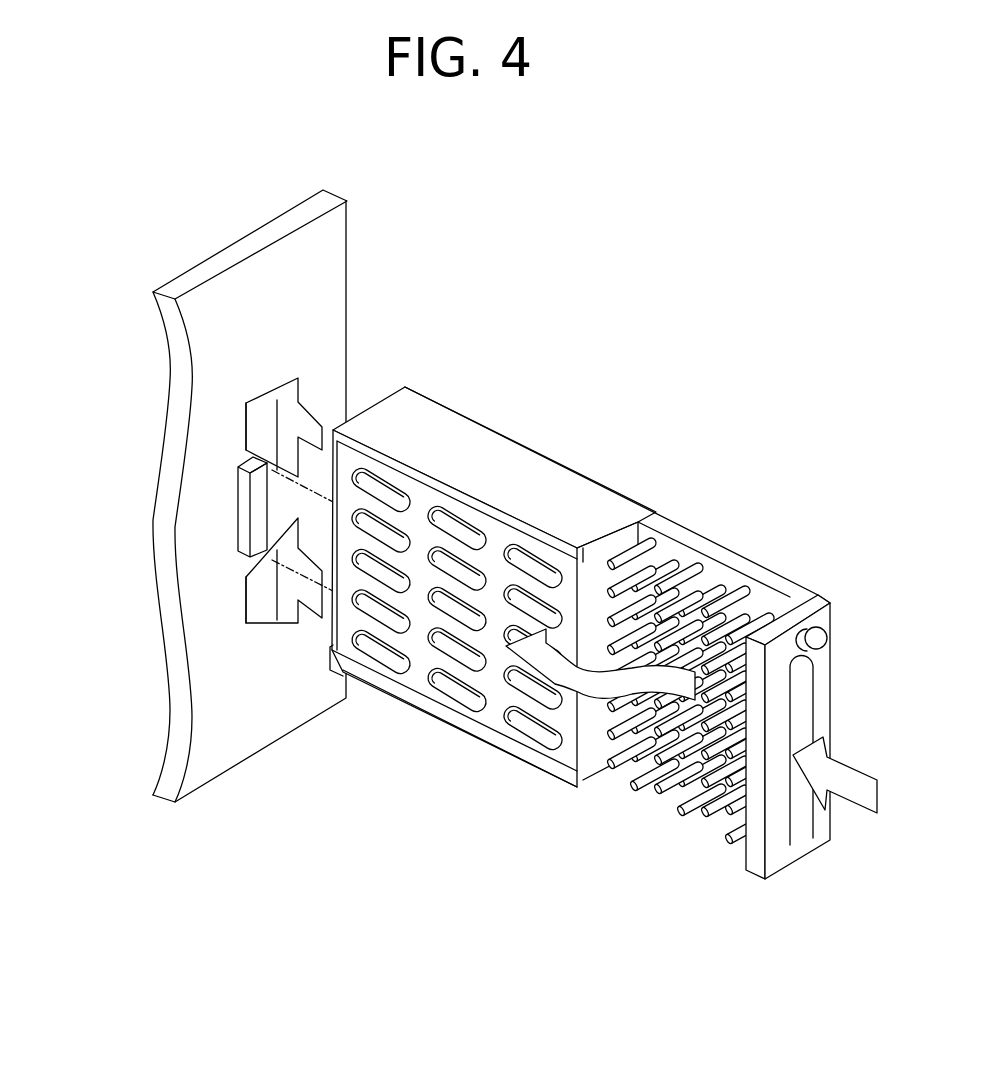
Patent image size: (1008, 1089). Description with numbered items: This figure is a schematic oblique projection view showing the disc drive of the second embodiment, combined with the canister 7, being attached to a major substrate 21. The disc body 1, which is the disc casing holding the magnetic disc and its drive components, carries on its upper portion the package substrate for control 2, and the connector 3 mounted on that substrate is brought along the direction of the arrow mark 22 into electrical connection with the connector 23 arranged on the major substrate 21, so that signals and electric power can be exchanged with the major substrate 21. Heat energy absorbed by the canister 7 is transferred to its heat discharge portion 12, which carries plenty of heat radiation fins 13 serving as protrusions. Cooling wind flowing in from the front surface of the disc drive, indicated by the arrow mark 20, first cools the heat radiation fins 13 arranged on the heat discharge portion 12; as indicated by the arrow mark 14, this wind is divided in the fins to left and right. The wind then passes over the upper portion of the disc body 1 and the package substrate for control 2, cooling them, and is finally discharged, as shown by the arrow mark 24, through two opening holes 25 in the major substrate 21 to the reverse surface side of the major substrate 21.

The disc body 1 is at (643, 626).
The package substrate for control 2 is at (587, 597).
The connector 3 is at (262, 500).
The canister 7 is at (507, 462).
The heat discharge portion 12 is at (707, 550).
The heat radiation fins 13 is at (735, 593).
The arrow mark 14 is at (853, 790).
The arrow mark 20 is at (572, 677).
The major substrate 21 is at (232, 752).
The arrow mark 22 is at (262, 477).
The connector 23 is at (242, 530).
The arrow mark 24 is at (303, 428).
The opening holes 25 is at (257, 417).